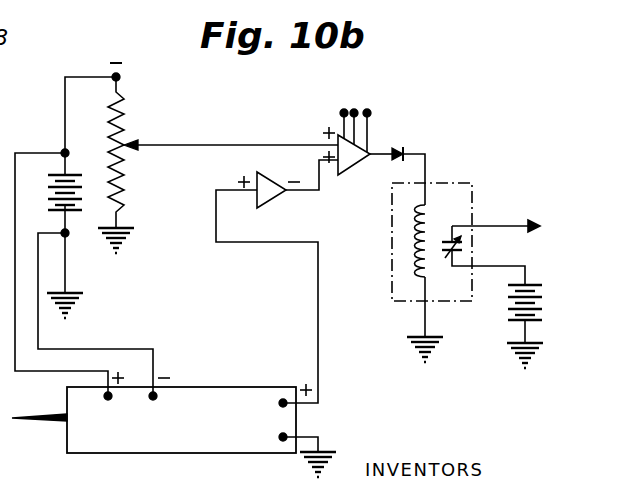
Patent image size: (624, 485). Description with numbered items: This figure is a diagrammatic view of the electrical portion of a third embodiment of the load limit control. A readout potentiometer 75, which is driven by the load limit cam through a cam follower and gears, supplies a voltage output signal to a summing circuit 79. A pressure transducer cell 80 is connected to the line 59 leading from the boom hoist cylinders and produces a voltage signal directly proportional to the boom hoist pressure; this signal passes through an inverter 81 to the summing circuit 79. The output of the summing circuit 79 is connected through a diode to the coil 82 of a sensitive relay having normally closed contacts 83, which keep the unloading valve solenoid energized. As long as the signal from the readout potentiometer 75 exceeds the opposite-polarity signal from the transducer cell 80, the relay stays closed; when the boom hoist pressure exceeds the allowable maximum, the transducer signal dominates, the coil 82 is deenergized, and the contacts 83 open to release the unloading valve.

The readout potentiometer 75 is at (127, 181).
The summing circuit 79 is at (356, 168).
The pressure transducer cell 80 is at (246, 387).
The inverter 81 is at (270, 205).
The coil 82 is at (435, 210).
The normally closed contacts 83 is at (464, 254).
The line 59 is at (38, 424).